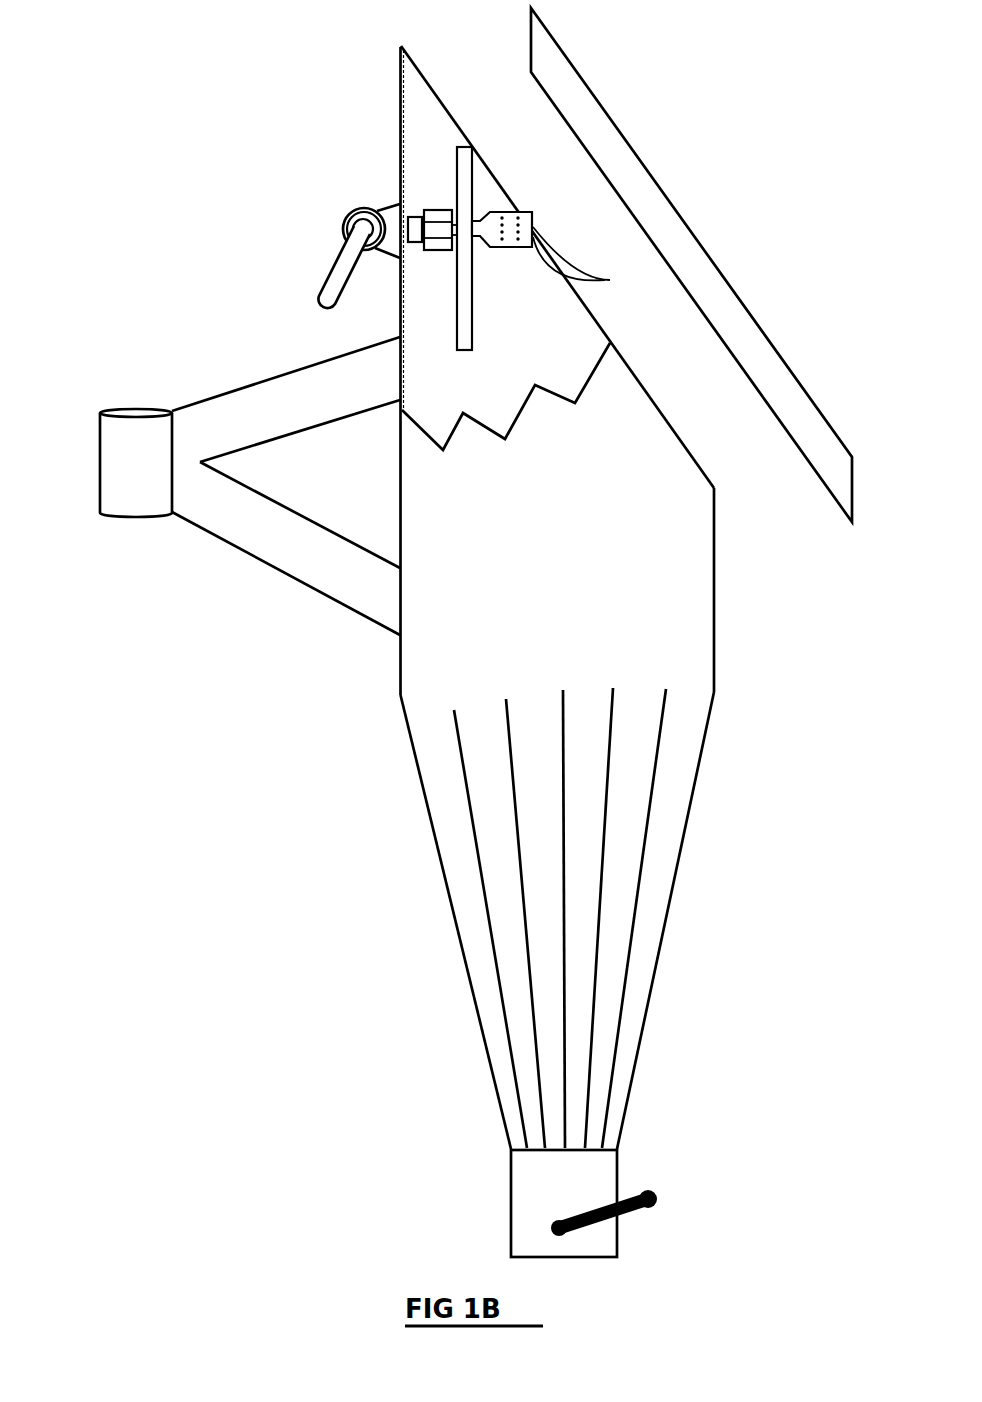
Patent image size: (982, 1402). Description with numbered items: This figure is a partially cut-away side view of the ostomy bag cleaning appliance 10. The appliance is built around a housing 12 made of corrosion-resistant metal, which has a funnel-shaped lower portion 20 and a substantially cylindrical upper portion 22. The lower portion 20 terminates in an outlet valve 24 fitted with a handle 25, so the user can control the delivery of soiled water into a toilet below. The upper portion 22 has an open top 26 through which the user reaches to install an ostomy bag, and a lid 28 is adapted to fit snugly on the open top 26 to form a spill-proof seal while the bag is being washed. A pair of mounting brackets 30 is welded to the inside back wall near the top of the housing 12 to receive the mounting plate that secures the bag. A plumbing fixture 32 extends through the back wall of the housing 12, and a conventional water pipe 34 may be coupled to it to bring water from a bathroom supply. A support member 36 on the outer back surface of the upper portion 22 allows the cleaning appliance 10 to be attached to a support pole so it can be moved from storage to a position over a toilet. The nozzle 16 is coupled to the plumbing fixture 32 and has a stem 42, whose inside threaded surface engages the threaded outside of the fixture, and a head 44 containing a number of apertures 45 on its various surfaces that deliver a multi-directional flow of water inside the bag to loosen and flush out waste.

The cleaning appliance 10 is at (262, 52).
The housing 12 is at (641, 597).
The nozzle 16 is at (521, 190).
The lower portion 20 is at (670, 917).
The upper portion 22 is at (716, 603).
The outlet valve 24 is at (617, 1172).
The handle 25 is at (660, 1197).
The open top 26 is at (680, 390).
The lid 28 is at (610, 133).
The mounting brackets 30 is at (465, 322).
The plumbing fixture 32 is at (363, 195).
The water pipe 34 is at (338, 273).
The support member 36 is at (182, 388).
The stem 42 is at (456, 140).
The head 44 is at (543, 220).
The apertures 45 is at (589, 260).